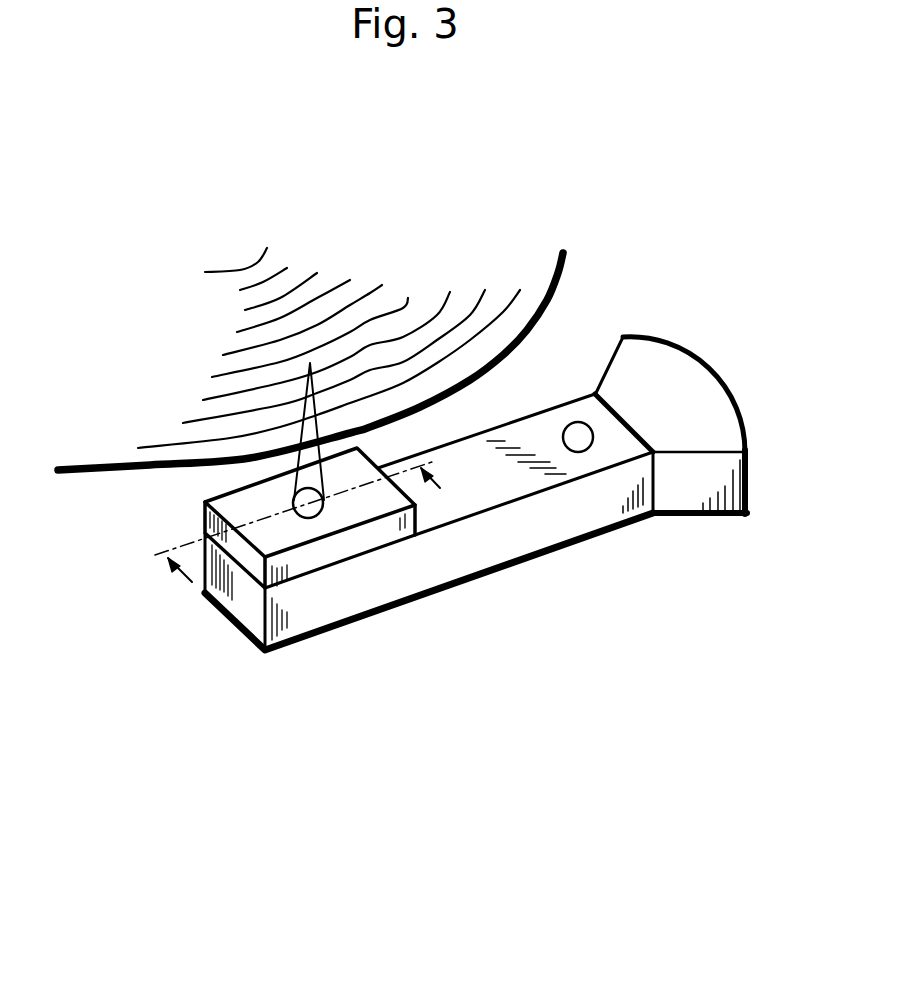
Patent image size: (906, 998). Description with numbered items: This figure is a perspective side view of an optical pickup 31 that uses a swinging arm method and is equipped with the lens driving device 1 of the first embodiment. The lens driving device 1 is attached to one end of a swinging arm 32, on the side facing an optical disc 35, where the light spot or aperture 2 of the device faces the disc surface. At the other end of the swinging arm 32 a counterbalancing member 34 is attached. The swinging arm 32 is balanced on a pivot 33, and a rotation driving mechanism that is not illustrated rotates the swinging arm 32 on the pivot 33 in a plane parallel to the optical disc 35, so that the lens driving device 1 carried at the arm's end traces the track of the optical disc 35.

The lens driving device 1 is at (298, 598).
The light spot / aperture 2 is at (293, 497).
The optical pickup 31 is at (467, 615).
The swinging arm 32 is at (530, 530).
The pivot 33 is at (578, 437).
The counterbalancing member 34 is at (662, 390).
The optical disc 35 is at (427, 295).